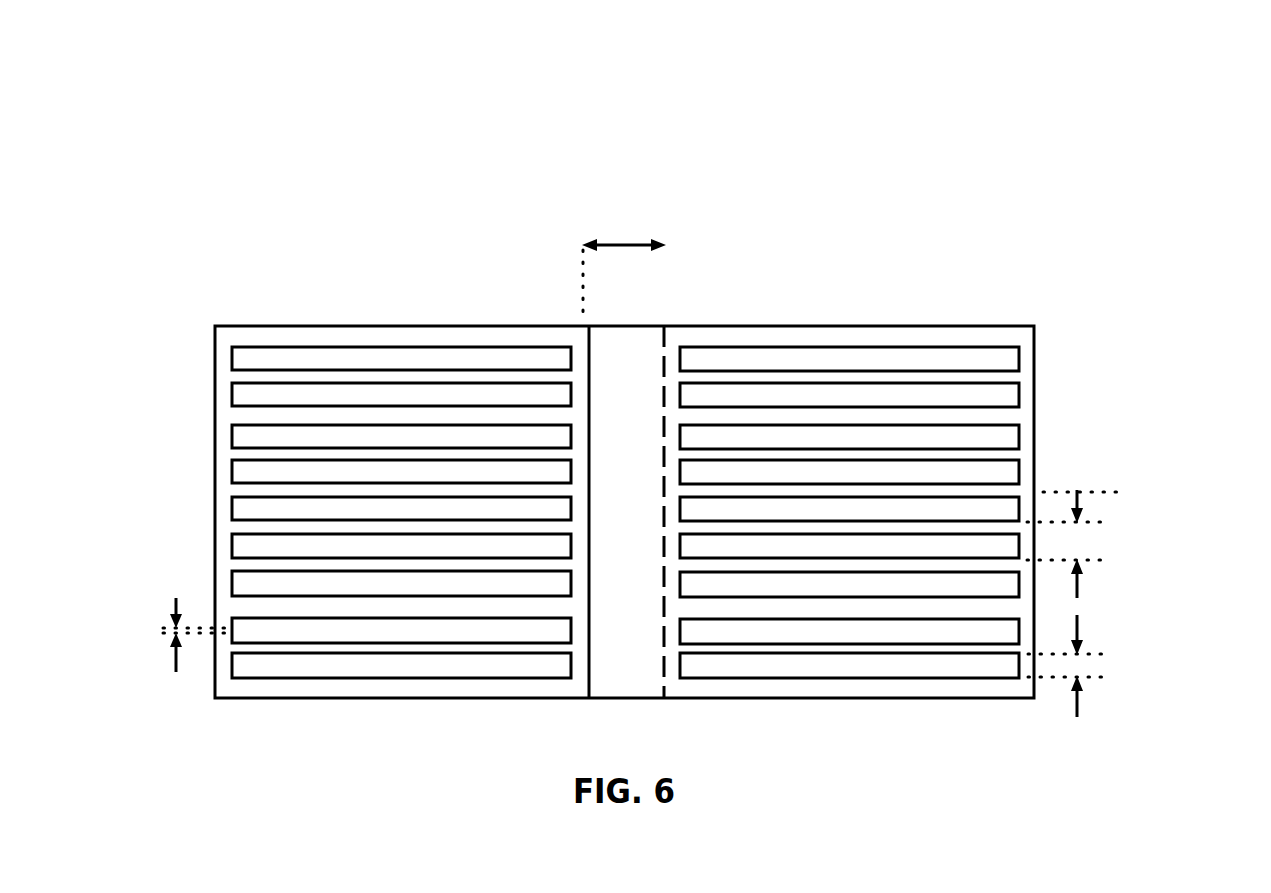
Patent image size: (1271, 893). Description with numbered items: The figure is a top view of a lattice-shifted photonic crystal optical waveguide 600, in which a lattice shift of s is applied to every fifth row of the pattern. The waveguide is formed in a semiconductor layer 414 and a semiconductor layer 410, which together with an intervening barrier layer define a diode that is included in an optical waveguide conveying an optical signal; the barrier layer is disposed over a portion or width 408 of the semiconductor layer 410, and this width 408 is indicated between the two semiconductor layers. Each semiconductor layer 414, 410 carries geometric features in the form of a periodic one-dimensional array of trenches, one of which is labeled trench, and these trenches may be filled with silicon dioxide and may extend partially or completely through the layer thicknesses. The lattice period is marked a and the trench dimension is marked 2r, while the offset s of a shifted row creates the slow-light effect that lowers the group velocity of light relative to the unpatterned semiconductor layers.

The lattice-shifted photonic crystal optical waveguide 600 is at (350, 124).
The semiconductor layer 414 is at (327, 342).
The semiconductor layer 410 is at (1023, 453).
The width 408 is at (625, 245).
The element trench is at (292, 663).
The lattice constant a is at (1078, 536).
The trench width 2r is at (1083, 663).
The lattice shift s is at (163, 632).